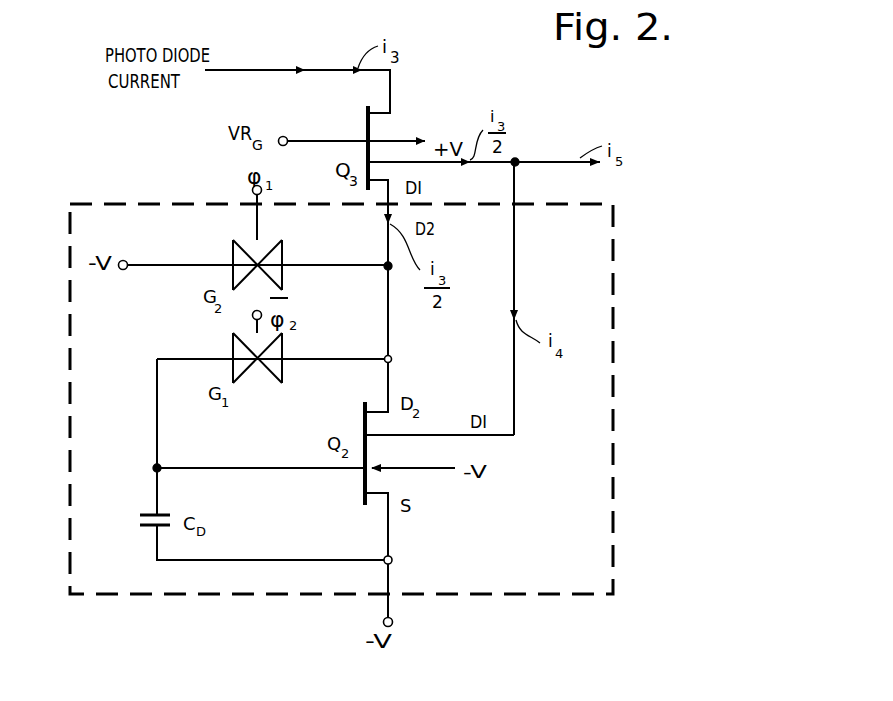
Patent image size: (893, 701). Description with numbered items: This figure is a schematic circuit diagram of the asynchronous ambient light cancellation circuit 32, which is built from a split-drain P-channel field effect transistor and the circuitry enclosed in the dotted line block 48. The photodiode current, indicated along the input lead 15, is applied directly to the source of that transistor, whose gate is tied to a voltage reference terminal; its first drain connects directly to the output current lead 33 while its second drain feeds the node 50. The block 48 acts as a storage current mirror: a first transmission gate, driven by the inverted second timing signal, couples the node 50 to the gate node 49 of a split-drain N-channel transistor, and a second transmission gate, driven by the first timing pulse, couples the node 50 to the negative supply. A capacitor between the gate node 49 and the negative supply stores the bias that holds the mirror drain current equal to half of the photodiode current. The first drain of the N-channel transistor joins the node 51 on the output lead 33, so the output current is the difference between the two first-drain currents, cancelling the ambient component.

The photodiode current input line 15 is at (271, 70).
The output current lead 33 is at (555, 164).
The node 51 is at (515, 160).
The ambient light cancellation circuit 32 is at (579, 260).
The node 50 is at (392, 357).
The gate node 49 is at (155, 467).
The dotted line block 48 is at (68, 592).